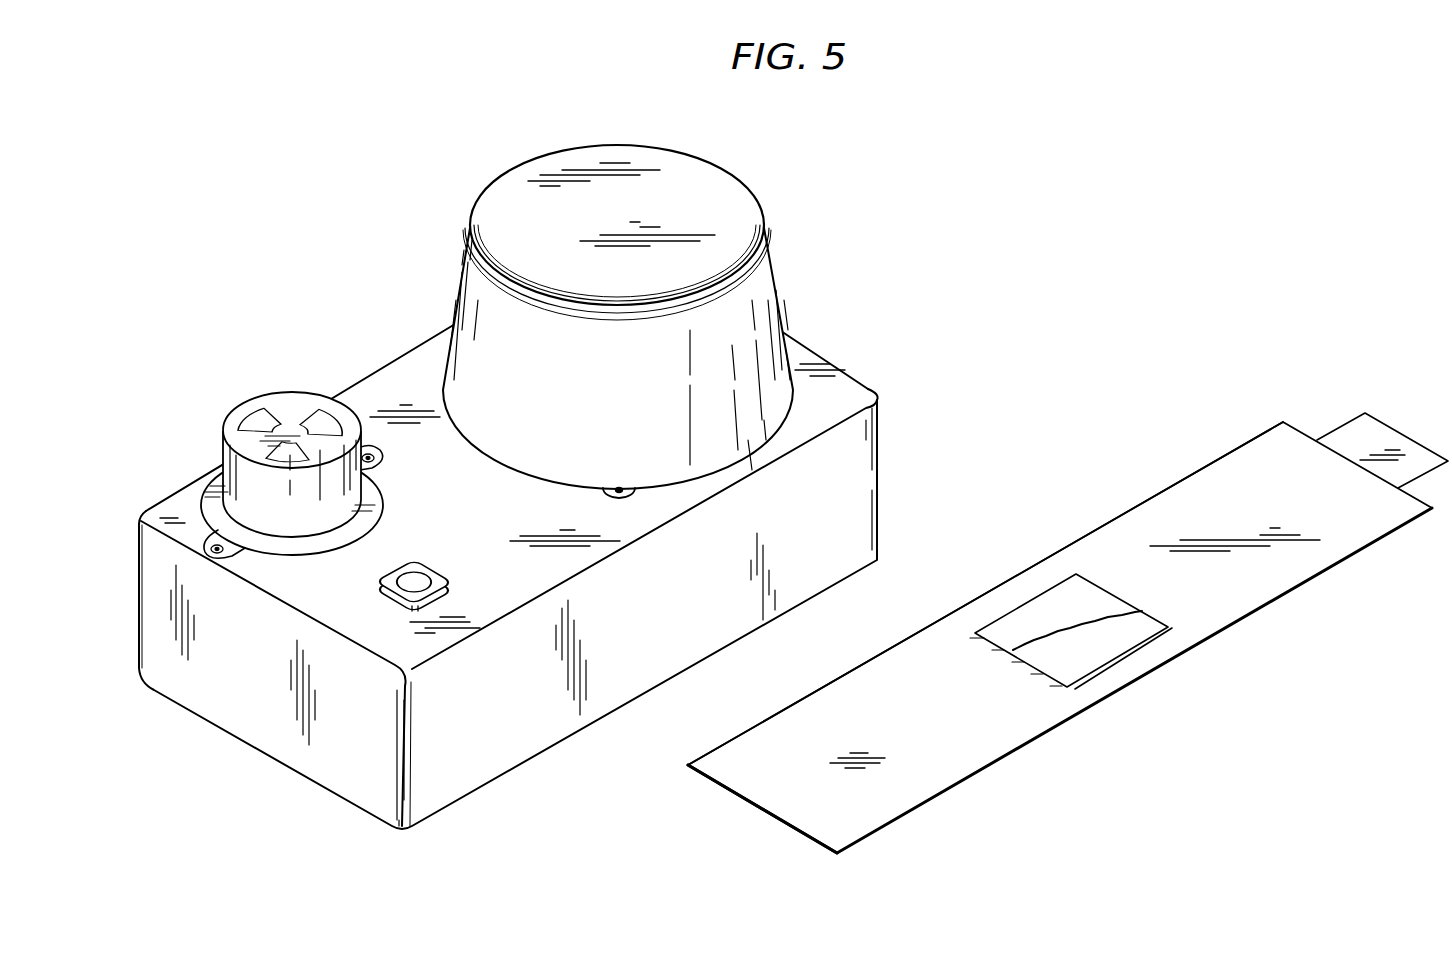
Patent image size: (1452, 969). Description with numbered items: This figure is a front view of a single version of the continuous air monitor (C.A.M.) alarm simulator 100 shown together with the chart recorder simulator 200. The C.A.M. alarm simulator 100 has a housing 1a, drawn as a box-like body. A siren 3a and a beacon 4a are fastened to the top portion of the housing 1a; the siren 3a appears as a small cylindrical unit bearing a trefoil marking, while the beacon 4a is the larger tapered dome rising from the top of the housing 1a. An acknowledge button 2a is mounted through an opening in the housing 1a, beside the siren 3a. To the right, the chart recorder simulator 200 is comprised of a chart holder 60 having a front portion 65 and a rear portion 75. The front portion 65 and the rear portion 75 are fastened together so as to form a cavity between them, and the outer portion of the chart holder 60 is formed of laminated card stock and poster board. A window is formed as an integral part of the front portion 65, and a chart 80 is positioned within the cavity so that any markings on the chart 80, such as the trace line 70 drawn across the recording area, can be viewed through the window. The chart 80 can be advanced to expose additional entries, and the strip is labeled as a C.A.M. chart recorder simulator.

The C.A.M. alarm simulator 100 is at (386, 240).
The housing 1a is at (284, 753).
The acknowledge button 2a is at (394, 598).
The siren 3a is at (278, 397).
The beacon 4a is at (737, 201).
The chart recorder simulator 200 is at (740, 836).
The chart holder 60 is at (1006, 758).
The front portion 65 is at (746, 772).
The rear portion 75 is at (746, 730).
The trace line 70 is at (1124, 664).
The chart 80 is at (1333, 440).